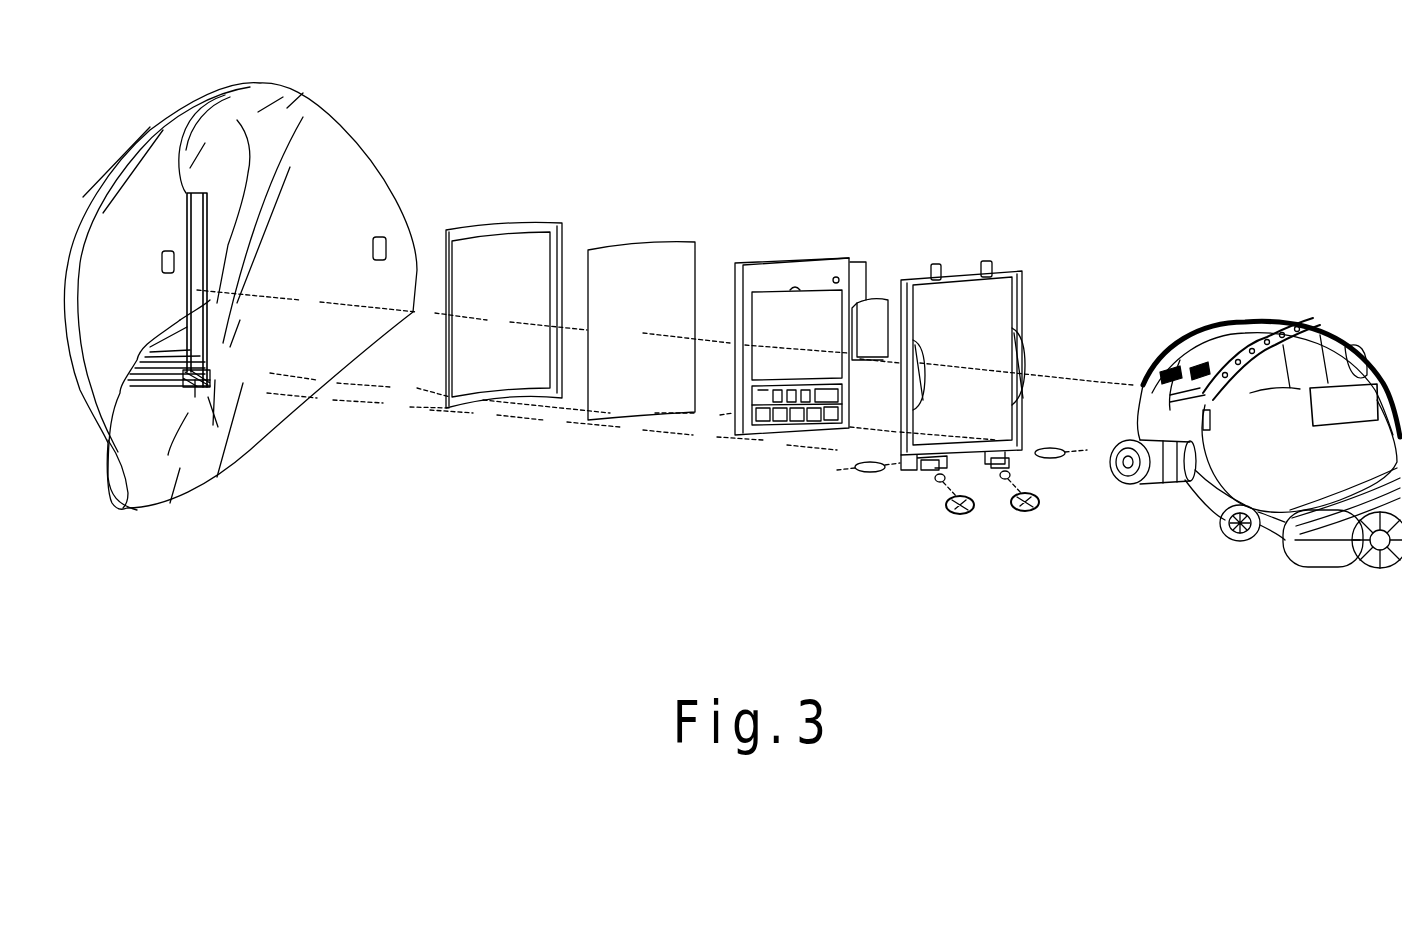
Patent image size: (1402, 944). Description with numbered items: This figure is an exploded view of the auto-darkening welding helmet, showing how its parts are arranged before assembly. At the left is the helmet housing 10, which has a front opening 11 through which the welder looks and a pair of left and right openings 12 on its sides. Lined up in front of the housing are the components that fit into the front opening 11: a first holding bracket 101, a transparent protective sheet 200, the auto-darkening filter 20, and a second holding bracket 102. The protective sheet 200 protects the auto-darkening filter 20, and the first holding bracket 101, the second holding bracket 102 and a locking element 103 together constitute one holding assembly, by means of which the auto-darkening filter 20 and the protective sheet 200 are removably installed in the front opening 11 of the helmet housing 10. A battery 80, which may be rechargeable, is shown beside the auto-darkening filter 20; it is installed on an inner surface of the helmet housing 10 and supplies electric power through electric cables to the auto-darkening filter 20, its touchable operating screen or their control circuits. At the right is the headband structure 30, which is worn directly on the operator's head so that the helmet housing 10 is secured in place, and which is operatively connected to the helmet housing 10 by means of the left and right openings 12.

The helmet housing 10 is at (240, 274).
The front opening 11 is at (163, 353).
The left and right openings 12 is at (272, 244).
The first holding bracket 101 is at (504, 300).
The transparent protective sheet 200 is at (641, 316).
The auto-darkening filter 20 is at (792, 331).
The battery 80 is at (885, 311).
The second holding bracket 102 is at (962, 349).
The locking element 103 is at (987, 505).
The headband structure 30 is at (1256, 434).